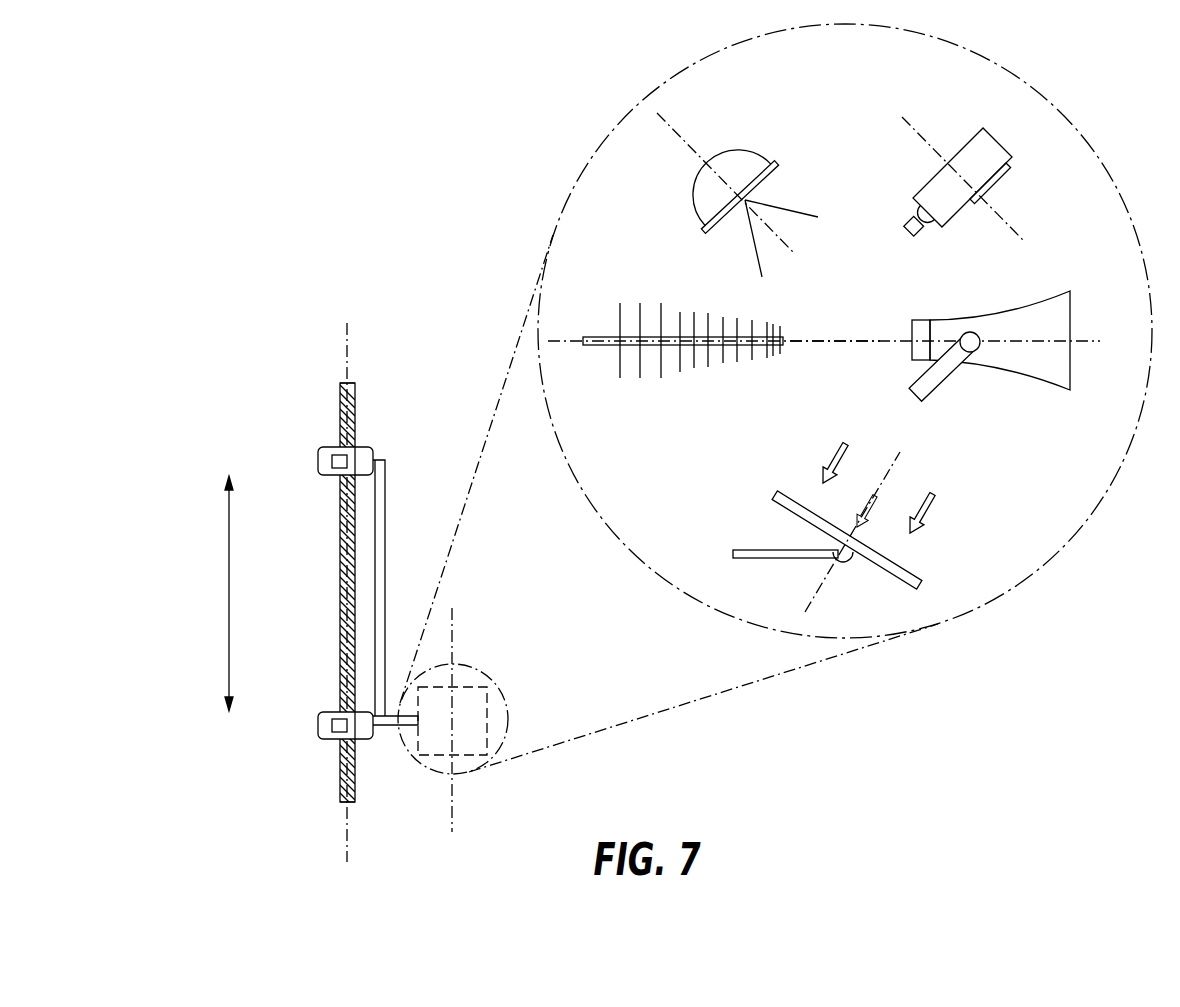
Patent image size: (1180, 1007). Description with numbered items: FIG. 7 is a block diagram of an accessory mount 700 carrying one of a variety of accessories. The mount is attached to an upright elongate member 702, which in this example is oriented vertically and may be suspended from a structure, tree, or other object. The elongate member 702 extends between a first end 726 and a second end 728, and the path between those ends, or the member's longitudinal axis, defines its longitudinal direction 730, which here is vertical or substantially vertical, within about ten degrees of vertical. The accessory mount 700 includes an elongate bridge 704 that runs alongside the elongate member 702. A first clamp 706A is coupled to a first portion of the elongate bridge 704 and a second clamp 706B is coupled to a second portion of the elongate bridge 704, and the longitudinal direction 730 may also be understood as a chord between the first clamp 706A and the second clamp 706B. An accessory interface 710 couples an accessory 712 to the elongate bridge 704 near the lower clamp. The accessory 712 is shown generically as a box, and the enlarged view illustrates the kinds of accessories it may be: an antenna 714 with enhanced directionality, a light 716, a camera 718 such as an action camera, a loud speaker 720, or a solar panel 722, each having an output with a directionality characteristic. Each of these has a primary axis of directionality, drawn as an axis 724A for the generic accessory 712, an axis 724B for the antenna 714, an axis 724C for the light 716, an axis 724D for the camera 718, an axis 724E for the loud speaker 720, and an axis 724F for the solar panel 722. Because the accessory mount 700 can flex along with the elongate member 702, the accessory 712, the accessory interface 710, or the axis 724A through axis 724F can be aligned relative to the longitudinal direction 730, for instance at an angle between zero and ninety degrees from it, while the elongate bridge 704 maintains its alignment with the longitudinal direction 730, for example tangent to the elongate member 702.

The accessory mount 700 is at (276, 381).
The elongate member 702 is at (340, 589).
The elongate bridge 704 is at (387, 504).
The first clamp 706A is at (318, 461).
The second clamp 706B is at (318, 725).
The accessory interface 710 is at (403, 727).
The accessory 712 is at (502, 690).
The antenna 714 is at (618, 322).
The light 716 is at (742, 152).
The camera 718 is at (1000, 143).
The loud speaker 720 is at (1017, 310).
The solar panel 722 is at (783, 549).
The axis 724A is at (454, 633).
The axis 724B is at (810, 342).
The axis 724C is at (687, 147).
The axis 724D is at (912, 128).
The axis 724E is at (872, 340).
The axis 724F is at (818, 591).
The first end 726 is at (350, 382).
The second end 728 is at (345, 803).
The longitudinal direction 730 is at (228, 591).